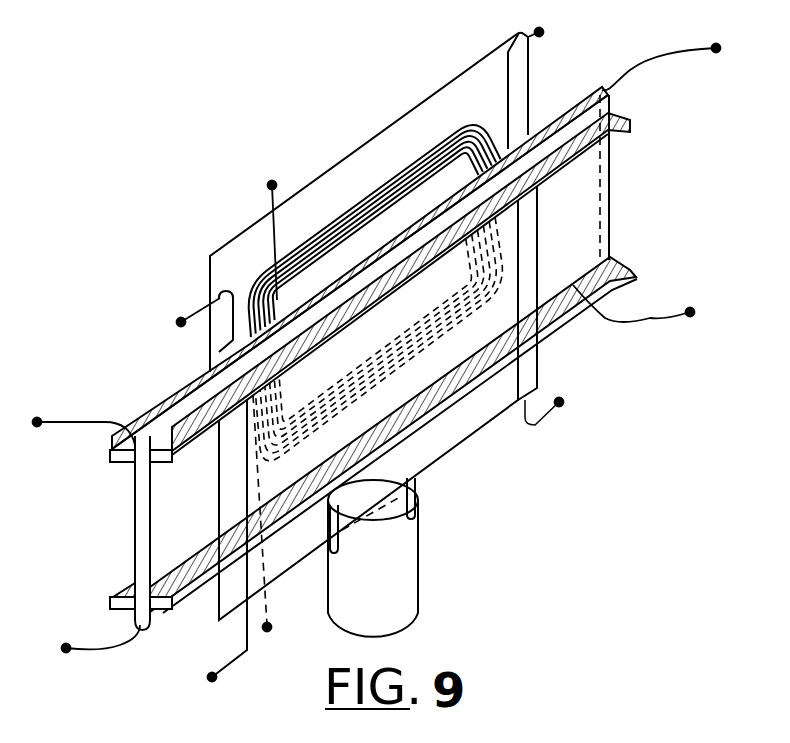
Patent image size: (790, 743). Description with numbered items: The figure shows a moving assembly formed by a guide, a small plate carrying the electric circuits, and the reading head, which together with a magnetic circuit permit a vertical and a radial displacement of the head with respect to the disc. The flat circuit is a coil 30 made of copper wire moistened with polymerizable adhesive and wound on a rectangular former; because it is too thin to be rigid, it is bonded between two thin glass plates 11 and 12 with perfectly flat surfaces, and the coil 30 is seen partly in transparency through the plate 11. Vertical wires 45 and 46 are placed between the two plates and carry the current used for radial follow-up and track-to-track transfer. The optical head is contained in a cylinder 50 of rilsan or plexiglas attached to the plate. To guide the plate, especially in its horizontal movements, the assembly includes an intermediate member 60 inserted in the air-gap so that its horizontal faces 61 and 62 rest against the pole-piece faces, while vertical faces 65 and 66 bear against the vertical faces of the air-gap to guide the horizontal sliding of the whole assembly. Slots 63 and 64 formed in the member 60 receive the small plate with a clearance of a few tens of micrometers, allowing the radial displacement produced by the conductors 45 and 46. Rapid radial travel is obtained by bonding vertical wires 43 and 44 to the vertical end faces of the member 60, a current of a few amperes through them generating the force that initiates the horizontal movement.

The thin glass plate 11 is at (543, 97).
The thin glass plate 12 is at (483, 36).
The coil 30 is at (481, 136).
The vertical wire 43 is at (135, 526).
The vertical wire 44 is at (387, 293).
The vertical wire 45 is at (222, 293).
The vertical wire 46 is at (378, 453).
The cylinder 50 is at (418, 582).
The intermediate member 60 is at (403, 368).
The horizontal face 61 is at (197, 584).
The horizontal face 62 is at (123, 588).
The slot 63 is at (568, 340).
The slot 64 is at (212, 374).
The vertical face 65 is at (172, 495).
The vertical face 66 is at (592, 253).